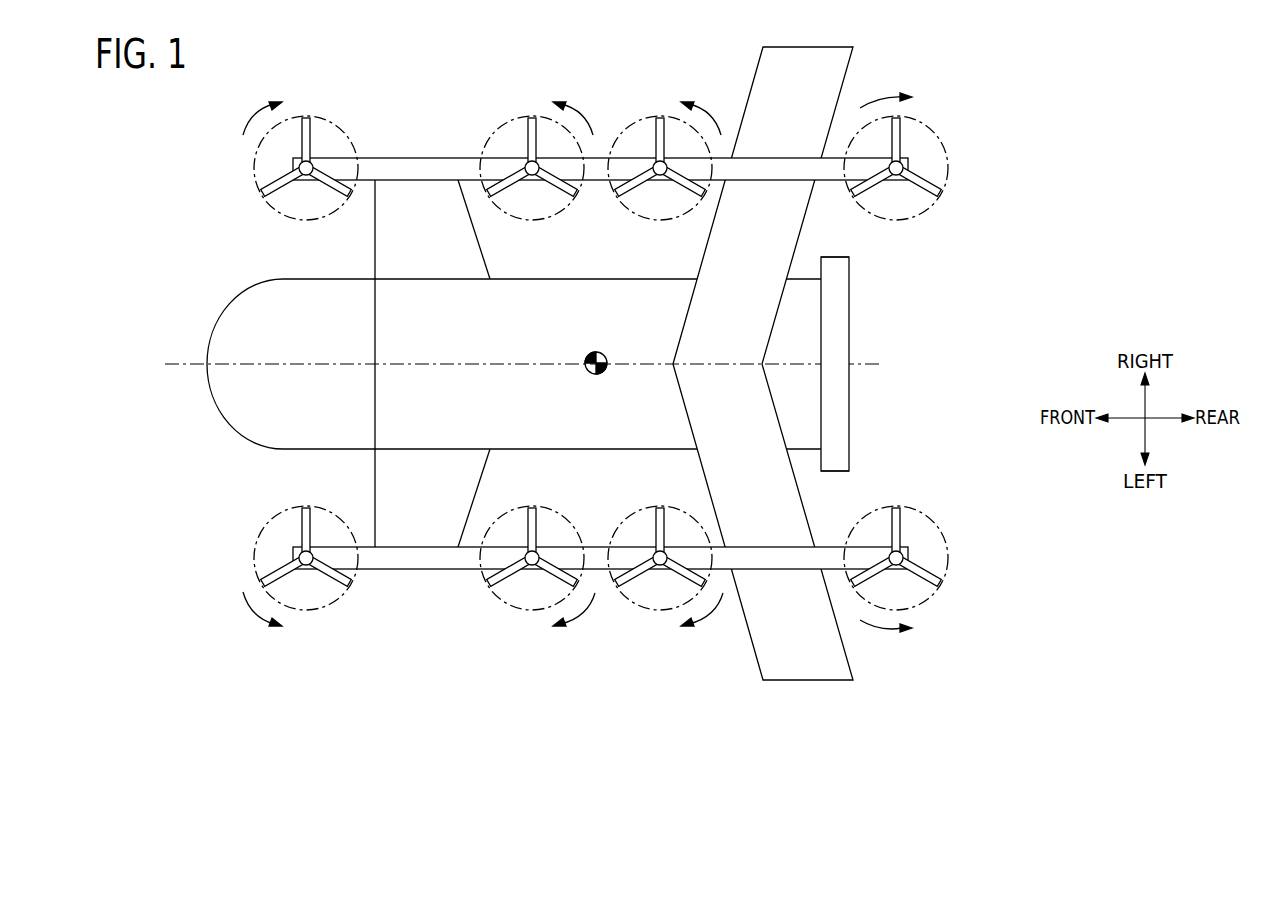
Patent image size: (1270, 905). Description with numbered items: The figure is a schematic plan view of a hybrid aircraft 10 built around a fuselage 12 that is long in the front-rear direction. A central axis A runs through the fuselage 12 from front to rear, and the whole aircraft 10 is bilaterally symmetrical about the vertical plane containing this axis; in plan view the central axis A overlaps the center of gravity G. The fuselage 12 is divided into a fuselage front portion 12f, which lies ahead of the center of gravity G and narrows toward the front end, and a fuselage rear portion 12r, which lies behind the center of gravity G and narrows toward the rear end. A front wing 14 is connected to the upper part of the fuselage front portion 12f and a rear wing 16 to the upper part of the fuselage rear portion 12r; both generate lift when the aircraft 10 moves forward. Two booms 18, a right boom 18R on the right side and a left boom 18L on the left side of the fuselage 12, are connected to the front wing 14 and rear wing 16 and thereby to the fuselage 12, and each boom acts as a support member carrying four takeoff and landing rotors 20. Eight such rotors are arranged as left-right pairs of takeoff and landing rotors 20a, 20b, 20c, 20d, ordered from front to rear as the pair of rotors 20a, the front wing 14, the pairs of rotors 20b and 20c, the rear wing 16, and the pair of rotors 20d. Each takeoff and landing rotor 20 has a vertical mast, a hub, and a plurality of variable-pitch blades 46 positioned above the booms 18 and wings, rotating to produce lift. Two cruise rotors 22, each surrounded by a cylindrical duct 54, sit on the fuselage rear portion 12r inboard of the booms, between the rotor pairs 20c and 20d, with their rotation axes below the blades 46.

The aircraft 10 is at (134, 134).
The fuselage 12 is at (486, 363).
The fuselage front portion 12f is at (245, 420).
The fuselage rear portion 12r is at (629, 278).
The front wing 14 is at (405, 200).
The rear wing 16 is at (763, 345).
The booms 18 is at (763, 363).
The right boom 18R is at (763, 157).
The left boom 18L is at (763, 571).
The takeoff and landing rotors 20 is at (626, 364).
The takeoff and landing rotor 20a is at (306, 117).
The takeoff and landing rotor 20b is at (532, 117).
The takeoff and landing rotor 20c is at (660, 117).
The takeoff and landing rotor 20d is at (901, 120).
The cruise rotors 22 is at (871, 365).
The blades 46 is at (262, 195).
The cylindrical duct 54 is at (835, 257).
The central axis A is at (516, 366).
The center of gravity G is at (589, 372).